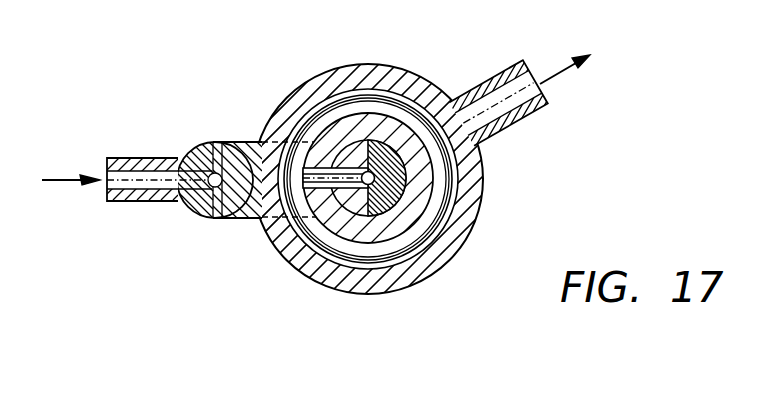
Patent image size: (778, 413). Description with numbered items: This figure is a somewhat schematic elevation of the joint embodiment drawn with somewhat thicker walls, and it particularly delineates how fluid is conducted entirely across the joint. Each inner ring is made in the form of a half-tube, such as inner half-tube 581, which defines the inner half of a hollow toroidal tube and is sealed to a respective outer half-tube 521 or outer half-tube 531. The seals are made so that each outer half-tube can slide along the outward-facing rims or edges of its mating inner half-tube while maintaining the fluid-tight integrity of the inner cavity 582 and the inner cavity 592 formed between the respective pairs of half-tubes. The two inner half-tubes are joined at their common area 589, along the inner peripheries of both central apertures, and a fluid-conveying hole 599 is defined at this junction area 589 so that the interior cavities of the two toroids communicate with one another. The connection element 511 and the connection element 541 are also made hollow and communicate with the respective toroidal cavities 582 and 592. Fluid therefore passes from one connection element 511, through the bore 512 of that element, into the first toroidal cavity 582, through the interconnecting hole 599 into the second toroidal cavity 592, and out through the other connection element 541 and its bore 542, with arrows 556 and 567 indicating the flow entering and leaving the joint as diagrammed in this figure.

The connection element 511 is at (143, 157).
The inlet tube bore 512 is at (168, 183).
The outer half-tube 521 is at (195, 142).
The outer half-tube 531 is at (315, 268).
The connection element 541 is at (498, 76).
The outlet tube bore 542 is at (497, 110).
The inlet flow direction arrow 556 is at (55, 178).
The outlet flow direction arrow 567 is at (556, 78).
The inner half-tube 581 is at (350, 150).
The inner cavity 582 is at (250, 222).
The common area 589 is at (357, 212).
The inner cavity 592 is at (440, 221).
The fluid-conveying hole 599 is at (330, 178).